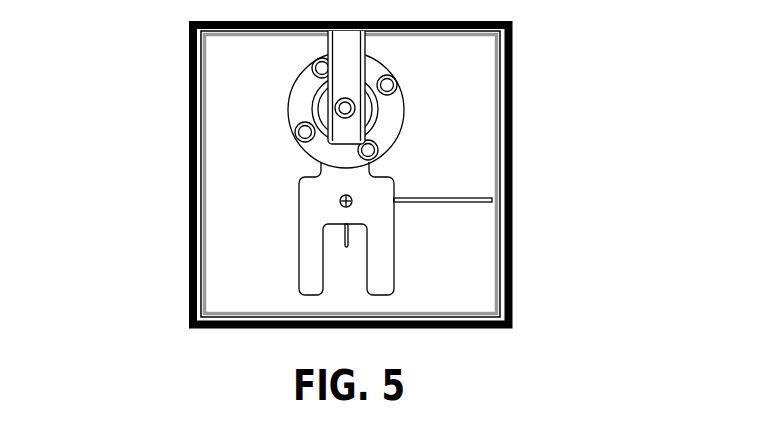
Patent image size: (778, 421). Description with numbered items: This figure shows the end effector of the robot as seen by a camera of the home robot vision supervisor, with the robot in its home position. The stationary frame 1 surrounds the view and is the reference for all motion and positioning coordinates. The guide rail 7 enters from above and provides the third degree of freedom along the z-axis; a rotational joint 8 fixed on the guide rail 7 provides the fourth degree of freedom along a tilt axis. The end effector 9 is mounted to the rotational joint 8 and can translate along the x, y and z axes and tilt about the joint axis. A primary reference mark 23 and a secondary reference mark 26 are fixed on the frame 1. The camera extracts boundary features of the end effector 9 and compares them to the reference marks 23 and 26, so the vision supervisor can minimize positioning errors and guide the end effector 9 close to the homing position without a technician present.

The frame 1 is at (217, 207).
The guide rail 7 is at (343, 53).
The rotational joint 8 is at (395, 98).
The end effector 9 is at (315, 187).
The primary reference mark 23 is at (413, 198).
The secondary reference mark 26 is at (350, 240).